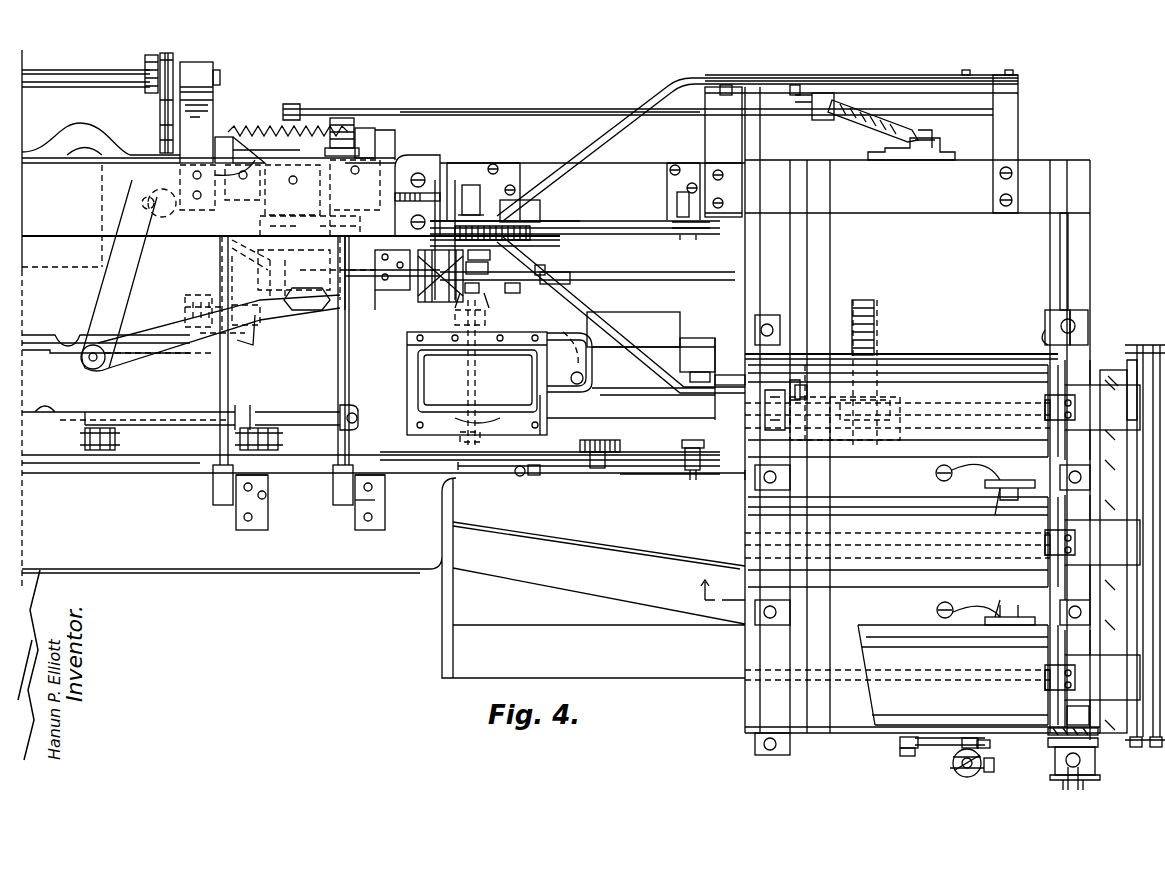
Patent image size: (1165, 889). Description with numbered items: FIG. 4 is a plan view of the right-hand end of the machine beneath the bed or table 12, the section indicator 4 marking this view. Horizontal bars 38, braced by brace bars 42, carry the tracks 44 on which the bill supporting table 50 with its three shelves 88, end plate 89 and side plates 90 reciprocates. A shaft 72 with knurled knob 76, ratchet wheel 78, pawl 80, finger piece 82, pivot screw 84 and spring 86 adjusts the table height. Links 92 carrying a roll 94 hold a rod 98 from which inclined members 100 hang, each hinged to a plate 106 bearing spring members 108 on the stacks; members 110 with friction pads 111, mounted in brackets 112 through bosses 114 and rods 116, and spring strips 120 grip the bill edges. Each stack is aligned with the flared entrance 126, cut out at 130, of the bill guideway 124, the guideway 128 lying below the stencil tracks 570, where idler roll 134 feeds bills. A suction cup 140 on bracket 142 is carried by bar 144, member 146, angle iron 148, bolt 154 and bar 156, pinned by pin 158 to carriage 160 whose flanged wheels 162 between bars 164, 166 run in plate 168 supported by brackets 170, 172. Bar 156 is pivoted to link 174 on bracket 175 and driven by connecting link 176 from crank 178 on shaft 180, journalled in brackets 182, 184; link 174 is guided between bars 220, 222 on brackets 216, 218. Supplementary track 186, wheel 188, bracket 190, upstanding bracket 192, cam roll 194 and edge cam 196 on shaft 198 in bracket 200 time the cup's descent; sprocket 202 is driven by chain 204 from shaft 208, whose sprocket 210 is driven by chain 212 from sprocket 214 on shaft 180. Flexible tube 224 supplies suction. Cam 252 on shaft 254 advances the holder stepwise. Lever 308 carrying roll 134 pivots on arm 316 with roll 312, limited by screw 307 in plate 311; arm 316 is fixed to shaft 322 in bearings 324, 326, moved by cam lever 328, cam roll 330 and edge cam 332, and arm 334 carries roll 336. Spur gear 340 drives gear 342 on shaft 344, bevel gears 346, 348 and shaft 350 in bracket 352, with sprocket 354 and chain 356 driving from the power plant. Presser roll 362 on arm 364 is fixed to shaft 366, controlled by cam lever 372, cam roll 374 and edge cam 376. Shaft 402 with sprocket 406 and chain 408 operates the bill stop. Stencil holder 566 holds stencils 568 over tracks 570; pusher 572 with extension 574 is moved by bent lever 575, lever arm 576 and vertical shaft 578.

The section line 4 is at (722, 588).
The machine bed or table 12 is at (289, 572).
The horizontal parallel bars 38 is at (895, 203).
The brace bars 42 is at (612, 540).
The tracks 44 is at (815, 272).
The tax bill supporting table 50 is at (838, 735).
The horizontal shaft 72 is at (978, 738).
The knurled adjusting knob 76 is at (990, 768).
The ratchet wheel 78 is at (992, 746).
The pawl member 80 is at (965, 745).
The finger piece 82 is at (960, 768).
The pivot screw 84 is at (903, 757).
The spring 86 is at (905, 737).
The shelves 88 is at (935, 380).
The vertical end plate 89 is at (1100, 445).
The vertical side plates 90 is at (755, 478).
The front and rear links 92 is at (1148, 345).
The roll 94 is at (1135, 745).
The horizontal rod 98 is at (1132, 345).
The inclined flat members 100 is at (1060, 388).
The horizontal plate 106 is at (1050, 426).
The flat spring members 108 is at (975, 440).
The bill-engaging member 110 is at (1045, 340).
The friction pad 111 is at (1095, 320).
The bracket 112 is at (1045, 312).
The bosses 114 is at (1085, 315).
The rods 116 is at (1045, 325).
The spring strip 120 is at (975, 470).
The tubular bill guideway 124 is at (305, 472).
The flared entrance 126 is at (700, 430).
The tax bill guideway 128 is at (142, 478).
The cut out 130 is at (68, 335).
The idler roll 134 is at (685, 445).
The suction cup 140 is at (835, 320).
The arm or bracket 142 is at (735, 385).
The bar 144 is at (622, 340).
The horizontal member 146 is at (744, 256).
The angle iron 148 is at (712, 345).
The bolt 154 is at (722, 95).
The horizontal bar 156 is at (648, 105).
The pin 158 is at (490, 195).
The carriage 160 is at (520, 210).
The flanged wheels 162 is at (490, 205).
The carriage bar 164 is at (555, 215).
The carriage bar 166 is at (520, 240).
The plate 168 is at (652, 228).
The bracket 170 is at (694, 230).
The bracket member 172 is at (520, 180).
The link 174 is at (887, 118).
The bracket 175 is at (940, 142).
The connecting link 176 is at (506, 110).
The crank member 178 is at (300, 118).
The horizontal shaft 180 is at (310, 196).
The supporting bracket 182 is at (270, 260).
The supporting bracket 184 is at (250, 212).
The supplementary track member 186 is at (656, 278).
The flanged wheel 188 is at (565, 275).
The bracket member 190 is at (552, 270).
The upstanding bracket 192 is at (520, 284).
The cam roll 194 is at (482, 285).
The edge cam 196 is at (460, 318).
The horizontal shaft 198 is at (420, 255).
The vertical bracket 200 is at (395, 260).
The sprocket wheel 202 is at (415, 236).
The endless sprocket chain 204 is at (420, 280).
The horizontal shaft 208 is at (478, 258).
The sprocket wheel 210 is at (476, 270).
The endless chain 212 is at (372, 284).
The sprocket 214 is at (315, 278).
The bracket member 216 is at (704, 147).
The bracket member 218 is at (1015, 137).
The horizontal bar 220 is at (940, 76).
The horizontal bar 222 is at (955, 83).
The flexible tube 224 is at (800, 385).
The cam 252 is at (875, 298).
The horizontal shaft 254 is at (910, 425).
The screw 307 is at (540, 478).
The vertically yieldable lever 308 is at (660, 476).
The vertical plate 311 is at (560, 475).
The roll 312 is at (615, 445).
The arm 316 is at (324, 455).
The horizontal shaft 322 is at (338, 364).
The bearing 324 is at (375, 508).
The bearing 326 is at (392, 150).
The cam lever 328 is at (370, 130).
The cam roll 330 is at (400, 140).
The edge cam 332 is at (345, 118).
The arm 334 is at (303, 412).
The roll 336 is at (282, 436).
The spur gear 340 is at (396, 162).
The smaller spur gear 342 is at (222, 250).
The shaft 344 is at (222, 258).
The bevelled gear 346 is at (290, 312).
The bevelled gear 348 is at (250, 318).
The horizontal shaft 350 is at (240, 340).
The bracket member 352 is at (200, 345).
The sprocket wheel 354 is at (185, 295).
The endless chain 356 is at (175, 352).
The presser roll 362 is at (116, 437).
The arm 364 is at (155, 412).
The shaft 366 is at (218, 386).
The cam lever 372 is at (255, 125).
The cam roll 374 is at (182, 172).
The edge cam 376 is at (273, 138).
The horizontal shaft 402 is at (96, 66).
The sprocket wheel 406 is at (175, 62).
The endless chain 408 is at (165, 110).
The stencil holder 566 is at (525, 432).
The stencils 568 is at (477, 387).
The stencil tracks or guideways 570 is at (382, 346).
The pusher plate 572 is at (555, 395).
The extension 574 is at (590, 390).
The bent lever 575 is at (590, 372).
The lever arm 576 is at (125, 302).
The shaft 578 is at (158, 208).